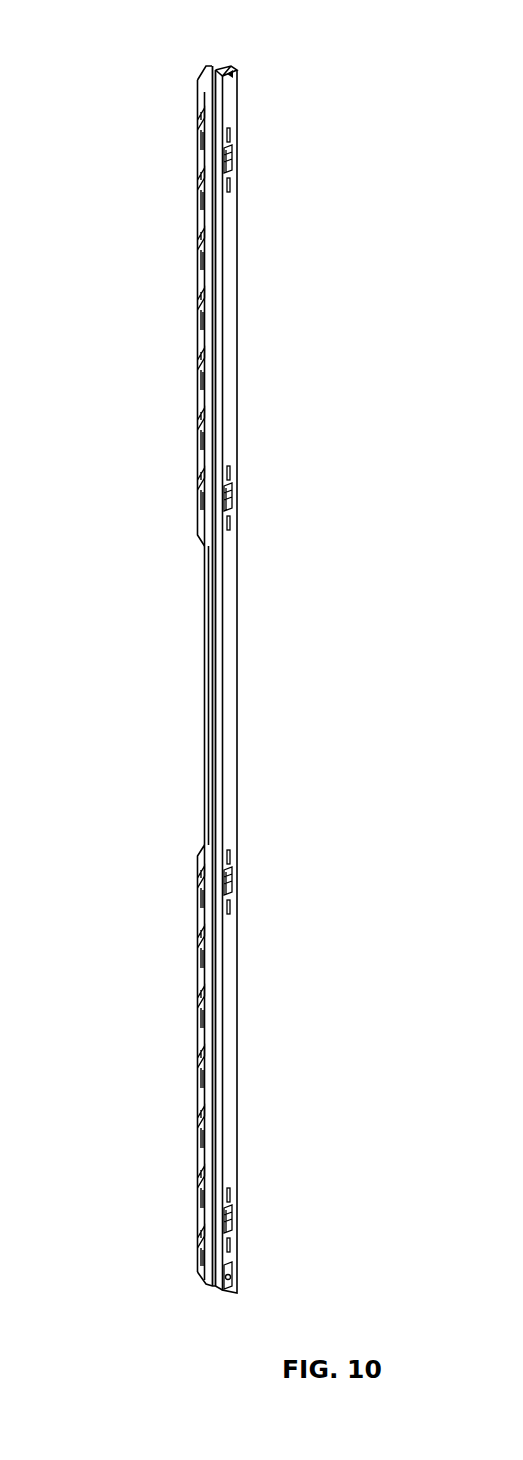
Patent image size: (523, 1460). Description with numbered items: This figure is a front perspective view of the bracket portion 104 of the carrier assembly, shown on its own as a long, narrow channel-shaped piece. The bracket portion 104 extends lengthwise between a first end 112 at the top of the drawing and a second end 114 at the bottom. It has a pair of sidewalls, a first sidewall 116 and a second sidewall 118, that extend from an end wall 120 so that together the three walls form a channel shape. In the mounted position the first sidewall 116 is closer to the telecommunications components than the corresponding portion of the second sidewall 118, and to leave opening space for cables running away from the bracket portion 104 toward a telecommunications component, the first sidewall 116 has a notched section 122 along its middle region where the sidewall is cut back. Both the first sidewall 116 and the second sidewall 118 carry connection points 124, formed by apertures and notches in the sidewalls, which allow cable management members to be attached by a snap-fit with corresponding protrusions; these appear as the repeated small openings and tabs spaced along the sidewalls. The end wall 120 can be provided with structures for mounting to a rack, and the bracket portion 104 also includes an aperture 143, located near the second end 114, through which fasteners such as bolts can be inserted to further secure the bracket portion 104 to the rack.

The bracket portion 104 is at (118, 40).
The first end 112 is at (205, 67).
The second end 114 is at (211, 1283).
The first sidewall 116 is at (200, 1065).
The second sidewall 118 is at (231, 1075).
The end wall 120 is at (226, 70).
The notched section 122 is at (203, 627).
The connection points 124 is at (232, 163).
The aperture 143 is at (221, 1286).